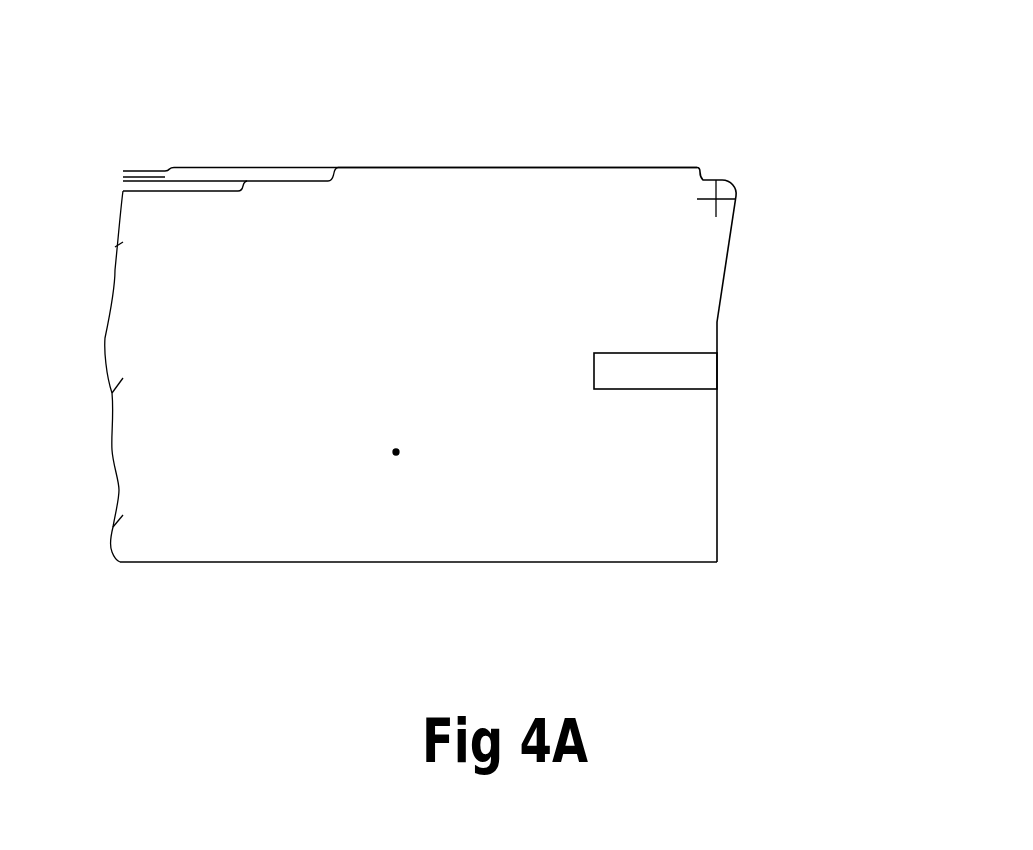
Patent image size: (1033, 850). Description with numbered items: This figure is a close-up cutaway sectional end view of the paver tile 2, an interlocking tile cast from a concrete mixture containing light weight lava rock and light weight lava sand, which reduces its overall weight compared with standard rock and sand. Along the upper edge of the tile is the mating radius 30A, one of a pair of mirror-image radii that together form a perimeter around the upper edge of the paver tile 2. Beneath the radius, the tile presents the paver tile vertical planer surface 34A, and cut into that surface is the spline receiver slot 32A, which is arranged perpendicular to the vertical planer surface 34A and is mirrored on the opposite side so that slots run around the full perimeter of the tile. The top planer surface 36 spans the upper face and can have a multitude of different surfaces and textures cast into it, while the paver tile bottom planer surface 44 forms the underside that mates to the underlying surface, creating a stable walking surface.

The paver tile 2 is at (396, 452).
The mating radius 30A is at (735, 197).
The spline receiver slot 32A is at (680, 353).
The paver tile vertical planer surface 34A is at (717, 512).
The top planer surface 36 is at (522, 168).
The paver tile bottom planer surface 44 is at (526, 562).